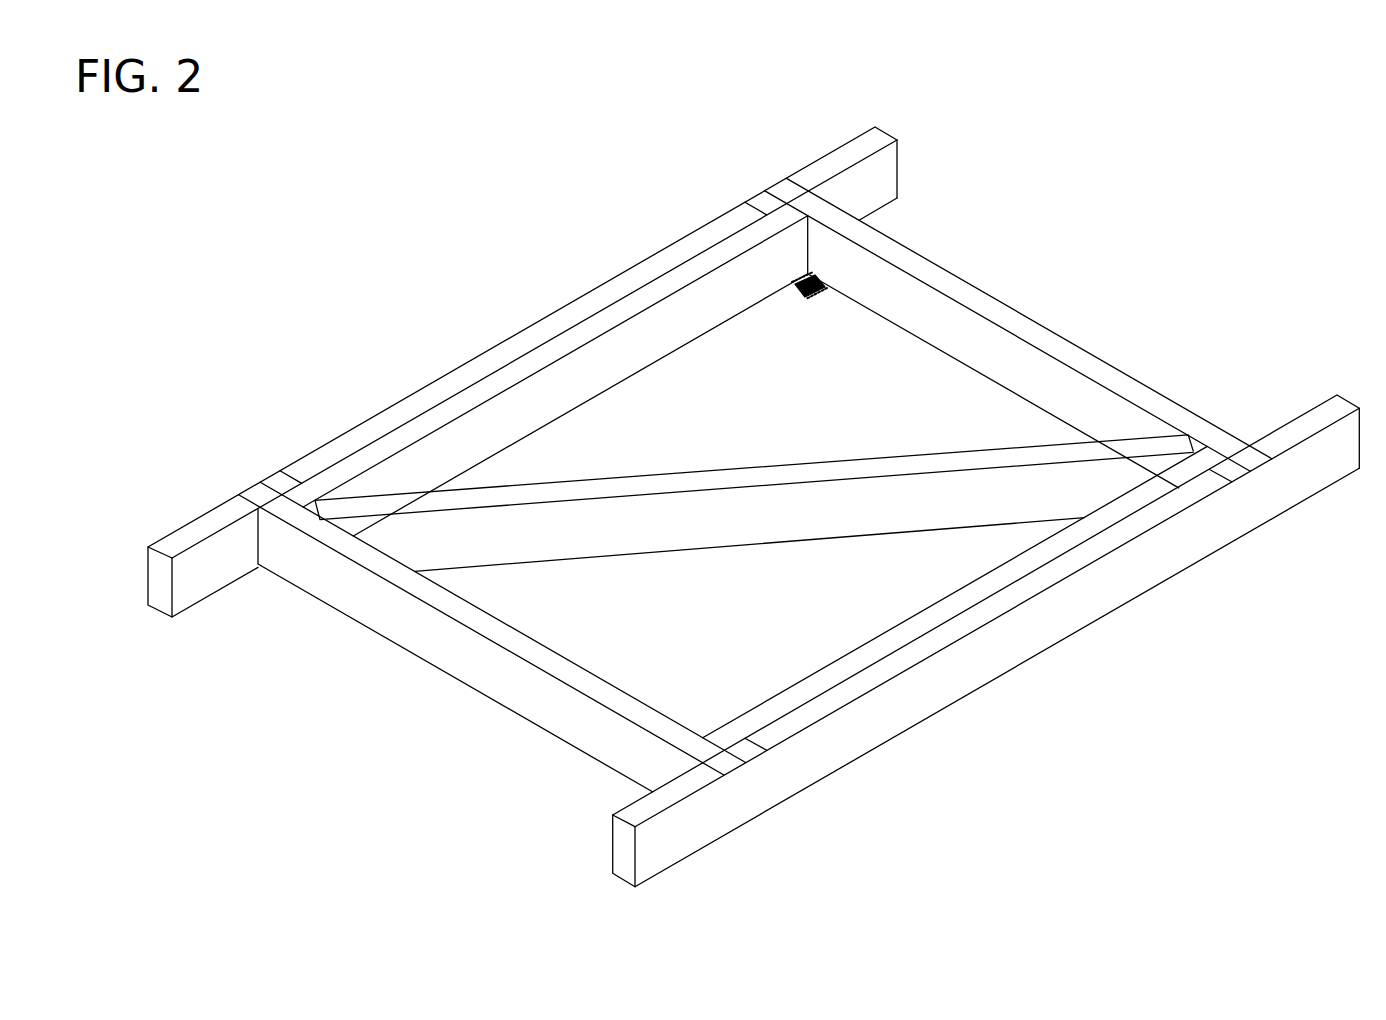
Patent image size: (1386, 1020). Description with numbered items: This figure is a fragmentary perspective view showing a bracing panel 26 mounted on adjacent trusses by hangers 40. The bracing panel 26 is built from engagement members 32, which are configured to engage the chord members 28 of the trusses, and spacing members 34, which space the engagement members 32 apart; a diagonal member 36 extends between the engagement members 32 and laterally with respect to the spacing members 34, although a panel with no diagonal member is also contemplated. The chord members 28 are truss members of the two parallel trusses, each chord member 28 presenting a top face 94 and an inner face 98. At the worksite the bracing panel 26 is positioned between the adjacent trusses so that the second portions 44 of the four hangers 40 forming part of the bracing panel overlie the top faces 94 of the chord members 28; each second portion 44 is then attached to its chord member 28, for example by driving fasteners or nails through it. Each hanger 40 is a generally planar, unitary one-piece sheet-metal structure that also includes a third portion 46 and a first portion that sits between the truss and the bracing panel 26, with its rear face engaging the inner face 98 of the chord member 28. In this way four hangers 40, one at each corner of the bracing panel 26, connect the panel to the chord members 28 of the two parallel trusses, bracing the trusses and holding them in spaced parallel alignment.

The bracing panel 26 is at (410, 660).
The chord member 28 is at (832, 150).
The engagement member 32 is at (565, 343).
The spacing member 34 is at (1060, 341).
The diagonal member 36 is at (700, 471).
The hanger 40 is at (771, 192).
The second portion 44 is at (755, 200).
The third portion 46 is at (806, 300).
The top face 94 is at (342, 440).
The inner face 98 is at (885, 172).